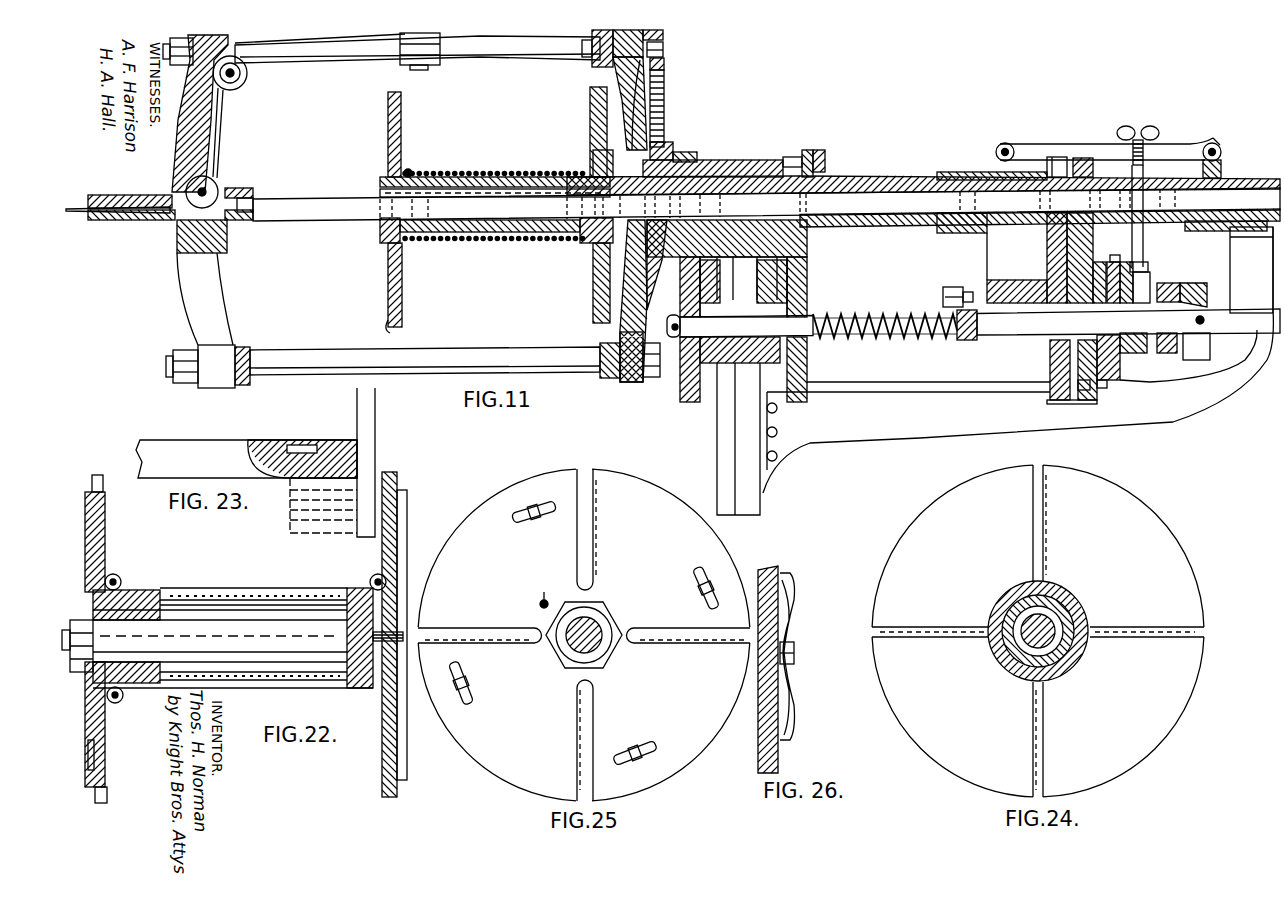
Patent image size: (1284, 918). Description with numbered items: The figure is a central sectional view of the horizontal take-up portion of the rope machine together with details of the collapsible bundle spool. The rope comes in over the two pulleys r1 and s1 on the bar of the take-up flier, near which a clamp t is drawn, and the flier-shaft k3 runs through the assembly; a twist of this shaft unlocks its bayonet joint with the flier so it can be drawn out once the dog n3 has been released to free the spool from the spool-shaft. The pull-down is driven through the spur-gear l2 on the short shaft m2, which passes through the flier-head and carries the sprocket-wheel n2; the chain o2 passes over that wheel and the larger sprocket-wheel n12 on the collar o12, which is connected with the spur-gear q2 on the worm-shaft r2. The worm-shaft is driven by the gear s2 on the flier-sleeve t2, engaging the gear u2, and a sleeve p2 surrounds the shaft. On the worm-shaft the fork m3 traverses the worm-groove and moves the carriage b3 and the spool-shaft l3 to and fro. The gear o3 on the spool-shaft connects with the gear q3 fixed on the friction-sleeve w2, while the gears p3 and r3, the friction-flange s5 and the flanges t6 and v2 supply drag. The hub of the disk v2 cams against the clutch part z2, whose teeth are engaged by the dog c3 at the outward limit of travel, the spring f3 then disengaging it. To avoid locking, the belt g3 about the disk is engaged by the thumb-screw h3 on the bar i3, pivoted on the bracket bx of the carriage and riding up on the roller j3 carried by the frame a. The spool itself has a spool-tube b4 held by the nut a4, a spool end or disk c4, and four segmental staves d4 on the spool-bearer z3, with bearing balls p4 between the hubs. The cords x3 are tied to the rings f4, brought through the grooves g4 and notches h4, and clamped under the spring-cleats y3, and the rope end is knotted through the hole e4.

In FIG. 11, the pulley s1 is at (248, 74).
In FIG. 11, the pulley r1 is at (207, 188).
In FIG. 11, the clamp t is at (413, 40).
In FIG. 11, the flier-shaft k3 is at (673, 204).
In FIG. 25, the flier-shaft k3 is at (600, 648).
In FIG. 24, the flier-shaft k3 is at (1072, 618).
In FIG. 11, the nut a4 is at (388, 190).
In FIG. 23, the nut a4 is at (255, 462).
In FIG. 22, the nut a4 is at (232, 646).
In FIG. 25, the nut a4 is at (600, 612).
In FIG. 11, the segmental staves d4 is at (490, 172).
In FIG. 22, the segmental staves d4 is at (265, 580).
In FIG. 24, the segmental staves d4 is at (1000, 668).
In FIG. 11, the ball bearings p4 is at (512, 173).
In FIG. 11, the ring f4 is at (411, 172).
In FIG. 22, the ring f4 is at (121, 578).
In FIG. 11, the spring-cleat y3 is at (593, 300).
In FIG. 25, the spring-cleat y3 is at (512, 522).
In FIG. 26, the spring-cleat y3 is at (795, 598).
In FIG. 11, the dog n3 is at (593, 152).
In FIG. 11, the spur-gear l2 is at (592, 62).
In FIG. 11, the short shaft m2 is at (664, 45).
In FIG. 11, the sprocket-wheel n2 is at (664, 62).
In FIG. 11, the chain o2 is at (664, 95).
In FIG. 11, the sprocket-wheel n12 is at (662, 152).
In FIG. 11, the collar o12 is at (672, 157).
In FIG. 11, the sleeve p2 is at (700, 162).
In FIG. 11, the gear s2 is at (805, 160).
In FIG. 11, the flier-sleeve t2 is at (818, 165).
In FIG. 11, the spool-shaft l3 is at (890, 181).
In FIG. 11, the gear u2 is at (808, 258).
In FIG. 11, the spur-gear q2 is at (680, 383).
In FIG. 11, the worm-shaft r2 is at (828, 305).
In FIG. 11, the friction-sleeve w2 is at (960, 343).
In FIG. 11, the fork m3 is at (948, 303).
In FIG. 11, the frame a is at (995, 371).
In FIG. 11, the carriage b3 is at (1015, 225).
In FIG. 11, the lug or bracket bx is at (1002, 143).
In FIG. 11, the bar i3 is at (1110, 141).
In FIG. 11, the pulley or roller j3 is at (1222, 152).
In FIG. 11, the gear o3 is at (1057, 157).
In FIG. 11, the gear p3 is at (1083, 158).
In FIG. 11, the thumb-screw h3 is at (1142, 128).
In FIG. 11, the belt g3 is at (1143, 240).
In FIG. 11, the friction-flange s5 is at (1115, 255).
In FIG. 11, the disk v2 is at (1142, 275).
In FIG. 11, the clutch part z2 is at (1165, 283).
In FIG. 11, the dog c3 is at (1185, 300).
In FIG. 11, the spring f3 is at (1210, 345).
In FIG. 11, the gear q3 is at (1072, 368).
In FIG. 11, the gear r3 is at (1092, 397).
In FIG. 11, the foot t6 is at (1127, 394).
In FIG. 23, the spool-bearer z3 is at (302, 448).
In FIG. 22, the notches h4 is at (95, 478).
In FIG. 25, the notches h4 is at (584, 622).
In FIG. 24, the notches h4 is at (862, 632).
In FIG. 22, the spool end or disk c4 is at (105, 560).
In FIG. 25, the spool end or disk c4 is at (584, 635).
In FIG. 22, the spool-tube b4 is at (233, 638).
In FIG. 25, the spool-tube b4 is at (618, 628).
In FIG. 24, the spool-tube b4 is at (1050, 604).
In FIG. 22, the cords x3 is at (106, 757).
In FIG. 25, the hole e4 is at (550, 590).
In FIG. 24, the grooves g4 is at (1150, 638).